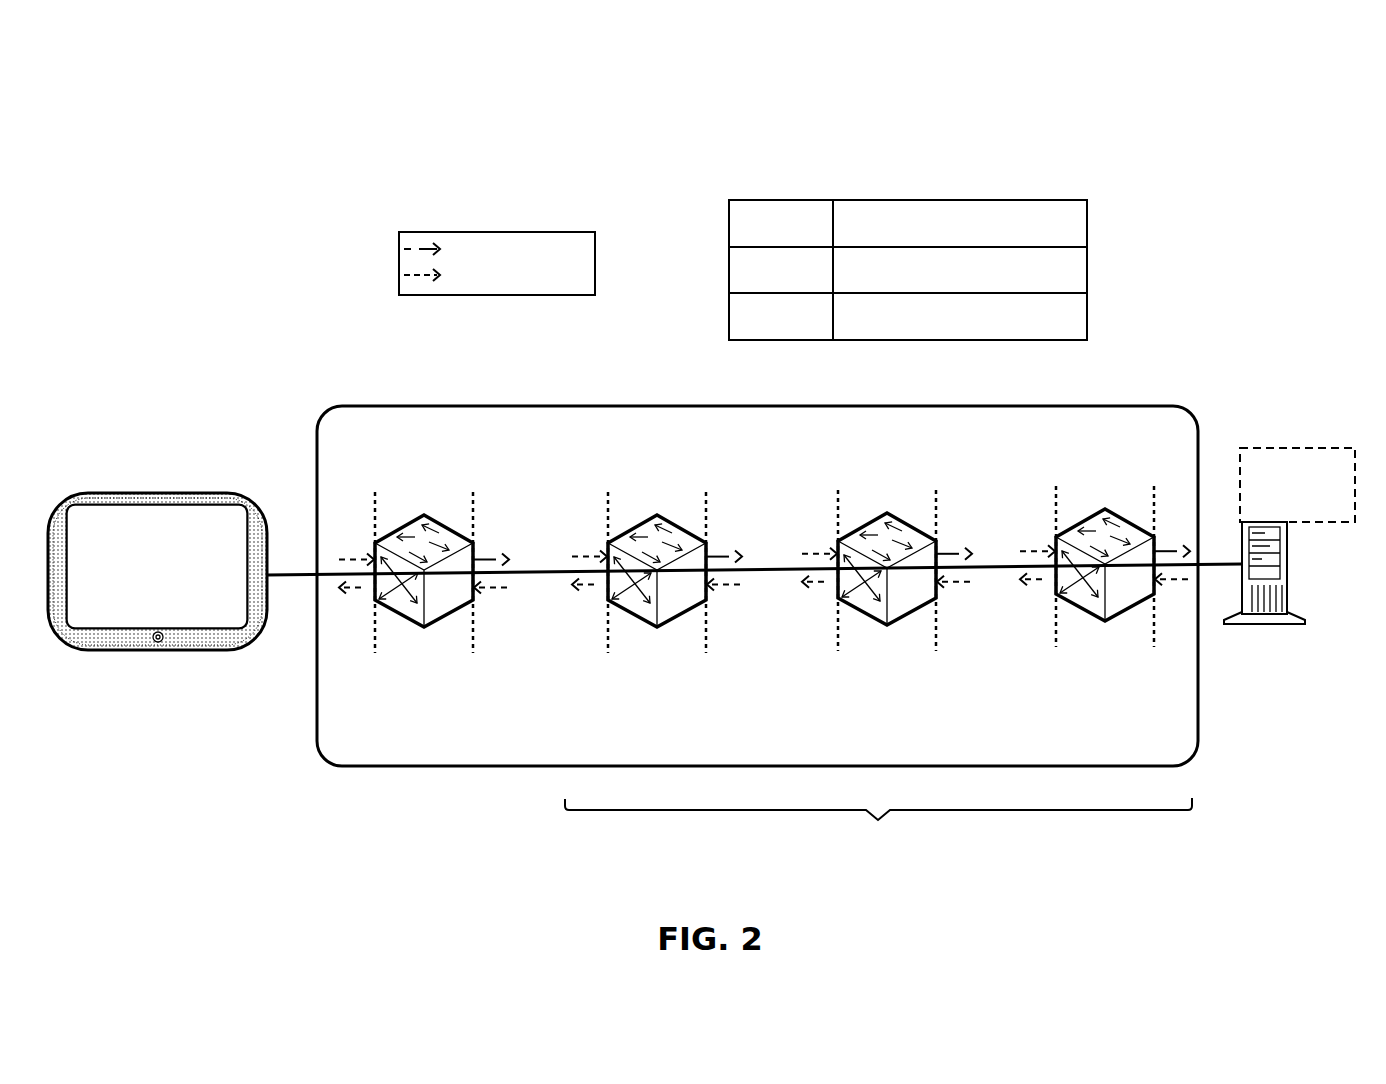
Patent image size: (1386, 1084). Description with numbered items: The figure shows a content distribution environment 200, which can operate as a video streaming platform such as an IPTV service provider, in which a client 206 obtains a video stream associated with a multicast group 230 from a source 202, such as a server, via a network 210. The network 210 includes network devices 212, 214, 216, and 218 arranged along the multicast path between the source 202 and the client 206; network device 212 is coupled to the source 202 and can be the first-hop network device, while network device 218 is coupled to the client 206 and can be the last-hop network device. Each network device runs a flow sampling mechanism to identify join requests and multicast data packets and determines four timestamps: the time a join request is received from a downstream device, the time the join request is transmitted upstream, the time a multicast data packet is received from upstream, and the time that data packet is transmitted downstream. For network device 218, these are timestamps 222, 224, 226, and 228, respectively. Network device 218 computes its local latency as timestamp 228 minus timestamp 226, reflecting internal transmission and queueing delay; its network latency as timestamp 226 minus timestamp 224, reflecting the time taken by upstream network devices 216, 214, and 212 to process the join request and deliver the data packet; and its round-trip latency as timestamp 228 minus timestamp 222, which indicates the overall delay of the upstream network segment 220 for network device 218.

The content distribution environment 200 is at (1080, 79).
The source 202 is at (1265, 625).
The client 206 is at (155, 650).
The network 210 is at (1200, 742).
The network device 212 is at (1106, 569).
The network device 214 is at (888, 573).
The network device 216 is at (658, 575).
The network device 218 is at (425, 571).
The upstream network segment 220 is at (878, 847).
The timestamp 222 is at (374, 494).
The timestamp 224 is at (472, 494).
The timestamp 226 is at (472, 651).
The timestamp 228 is at (374, 651).
The multicast group 230 is at (1297, 485).